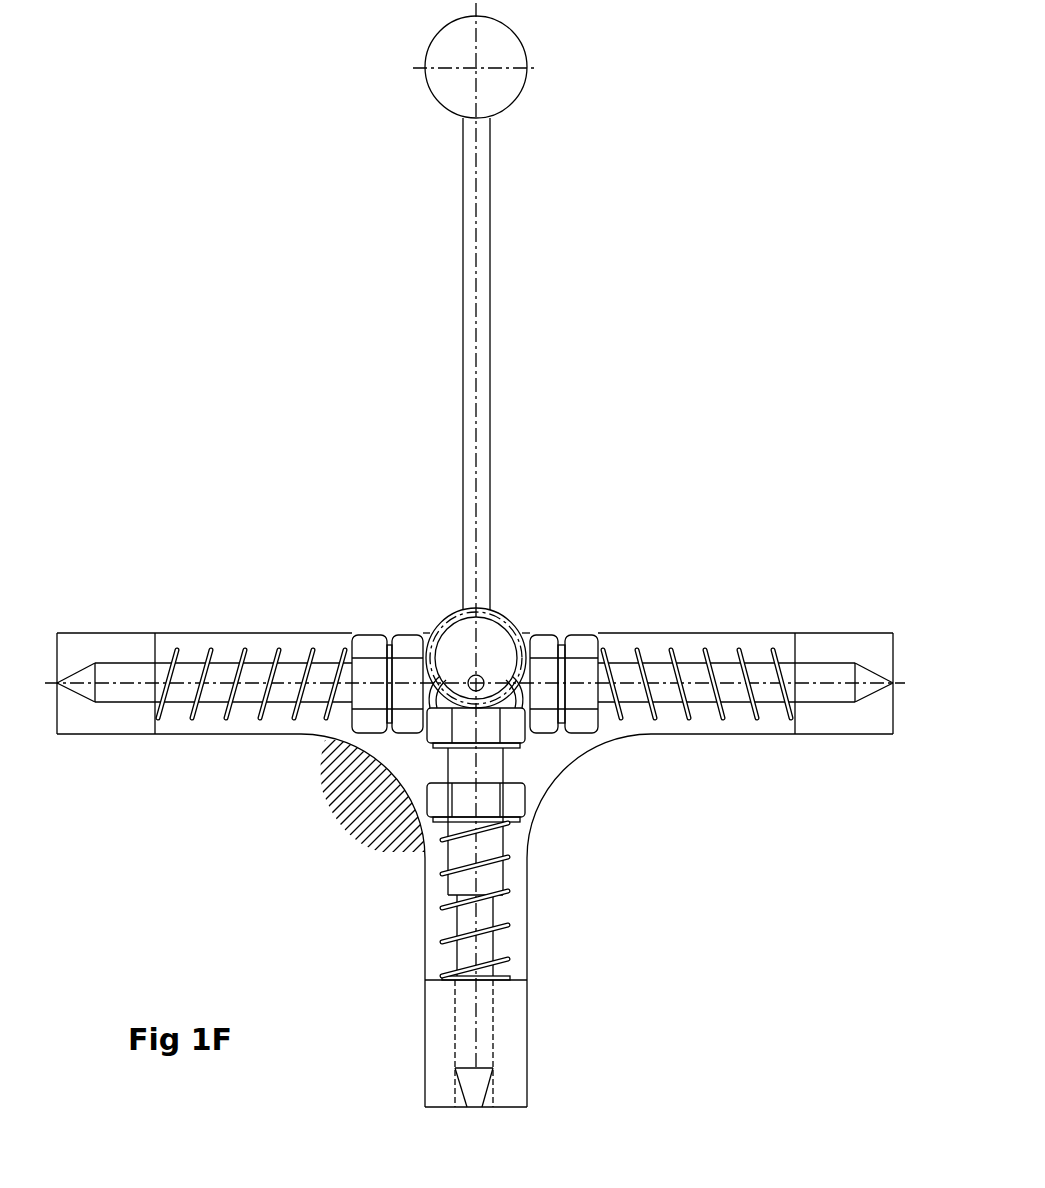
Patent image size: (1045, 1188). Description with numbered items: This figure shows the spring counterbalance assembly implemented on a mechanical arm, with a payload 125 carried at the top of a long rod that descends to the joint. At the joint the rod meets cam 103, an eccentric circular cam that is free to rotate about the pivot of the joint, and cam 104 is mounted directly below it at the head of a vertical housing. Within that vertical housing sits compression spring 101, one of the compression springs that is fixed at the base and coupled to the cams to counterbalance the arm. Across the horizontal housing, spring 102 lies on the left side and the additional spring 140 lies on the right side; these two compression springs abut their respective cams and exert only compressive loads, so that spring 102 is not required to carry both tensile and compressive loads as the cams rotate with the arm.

The payload 125 is at (553, 67).
The cam 103 is at (447, 613).
The cam 104 is at (509, 708).
The compression spring 102 is at (227, 713).
The spring 140 is at (673, 648).
The compression spring 101 is at (512, 930).